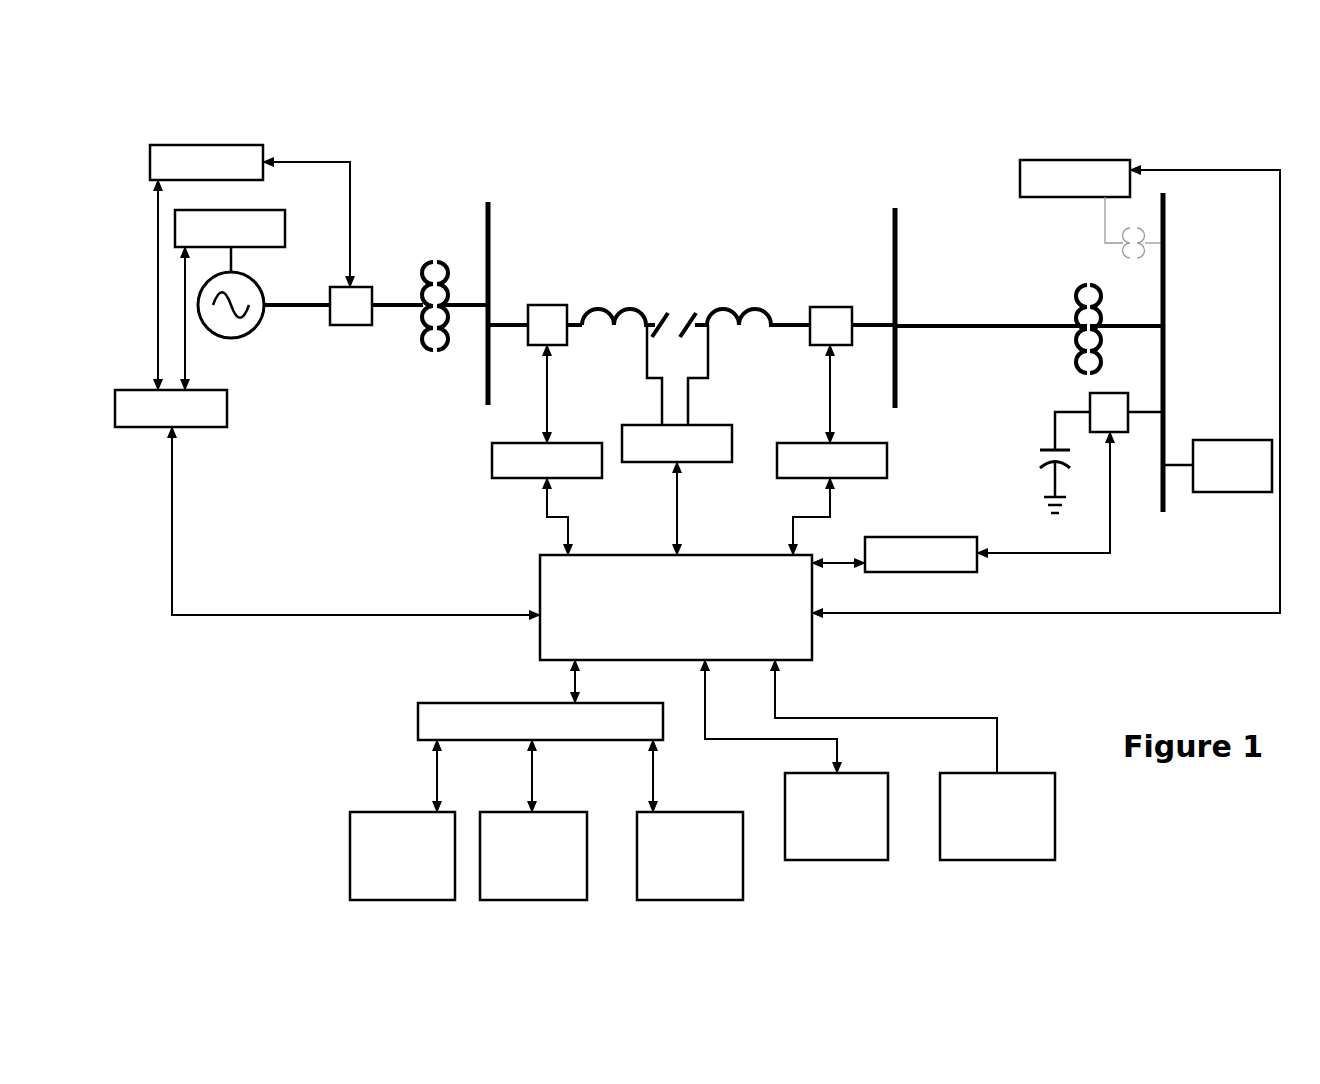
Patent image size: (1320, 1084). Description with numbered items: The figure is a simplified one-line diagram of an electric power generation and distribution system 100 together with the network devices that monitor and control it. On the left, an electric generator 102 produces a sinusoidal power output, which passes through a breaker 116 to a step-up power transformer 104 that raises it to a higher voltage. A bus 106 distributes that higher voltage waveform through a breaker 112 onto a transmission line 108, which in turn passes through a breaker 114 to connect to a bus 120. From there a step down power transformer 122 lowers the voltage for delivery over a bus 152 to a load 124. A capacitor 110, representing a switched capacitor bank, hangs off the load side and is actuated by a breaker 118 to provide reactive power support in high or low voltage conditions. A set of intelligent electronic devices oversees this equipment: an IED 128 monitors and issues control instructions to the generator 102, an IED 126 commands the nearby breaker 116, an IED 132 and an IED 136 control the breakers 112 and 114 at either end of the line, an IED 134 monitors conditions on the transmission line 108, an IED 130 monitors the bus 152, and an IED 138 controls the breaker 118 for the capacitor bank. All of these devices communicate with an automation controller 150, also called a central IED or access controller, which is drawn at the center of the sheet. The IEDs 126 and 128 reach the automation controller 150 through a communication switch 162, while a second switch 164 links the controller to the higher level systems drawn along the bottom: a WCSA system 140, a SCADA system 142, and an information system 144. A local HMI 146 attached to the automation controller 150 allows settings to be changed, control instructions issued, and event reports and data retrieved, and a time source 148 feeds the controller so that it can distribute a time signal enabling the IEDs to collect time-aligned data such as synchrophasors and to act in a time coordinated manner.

The electric power generation and distribution system 100 is at (174, 102).
The electric generator 102 is at (258, 282).
The step-up power transformer 104 is at (432, 355).
The bus 106 is at (486, 240).
The transmission line 108 is at (797, 322).
The capacitor 110 is at (1048, 440).
The breaker 112 is at (527, 374).
The breaker 114 is at (852, 375).
The breaker 116 is at (339, 306).
The breaker 118 is at (1109, 421).
The bus 120 is at (897, 335).
The step down power transformer 122 is at (1085, 282).
The load 124 is at (1217, 466).
The IED 126 is at (213, 145).
The IED 128 is at (262, 210).
The IED 130 is at (1132, 163).
The IED 132 is at (505, 480).
The IED 134 is at (660, 464).
The IED 136 is at (790, 480).
The IED 138 is at (930, 537).
The WCSA system 140 is at (402, 820).
The SCADA system 142 is at (533, 820).
The information system 144 is at (690, 820).
The local HMI 146 is at (796, 760).
The time source 148 is at (915, 760).
The automation controller 150 is at (676, 607).
The bus 152 is at (1165, 318).
The switch 162 is at (227, 420).
The switch 164 is at (482, 703).